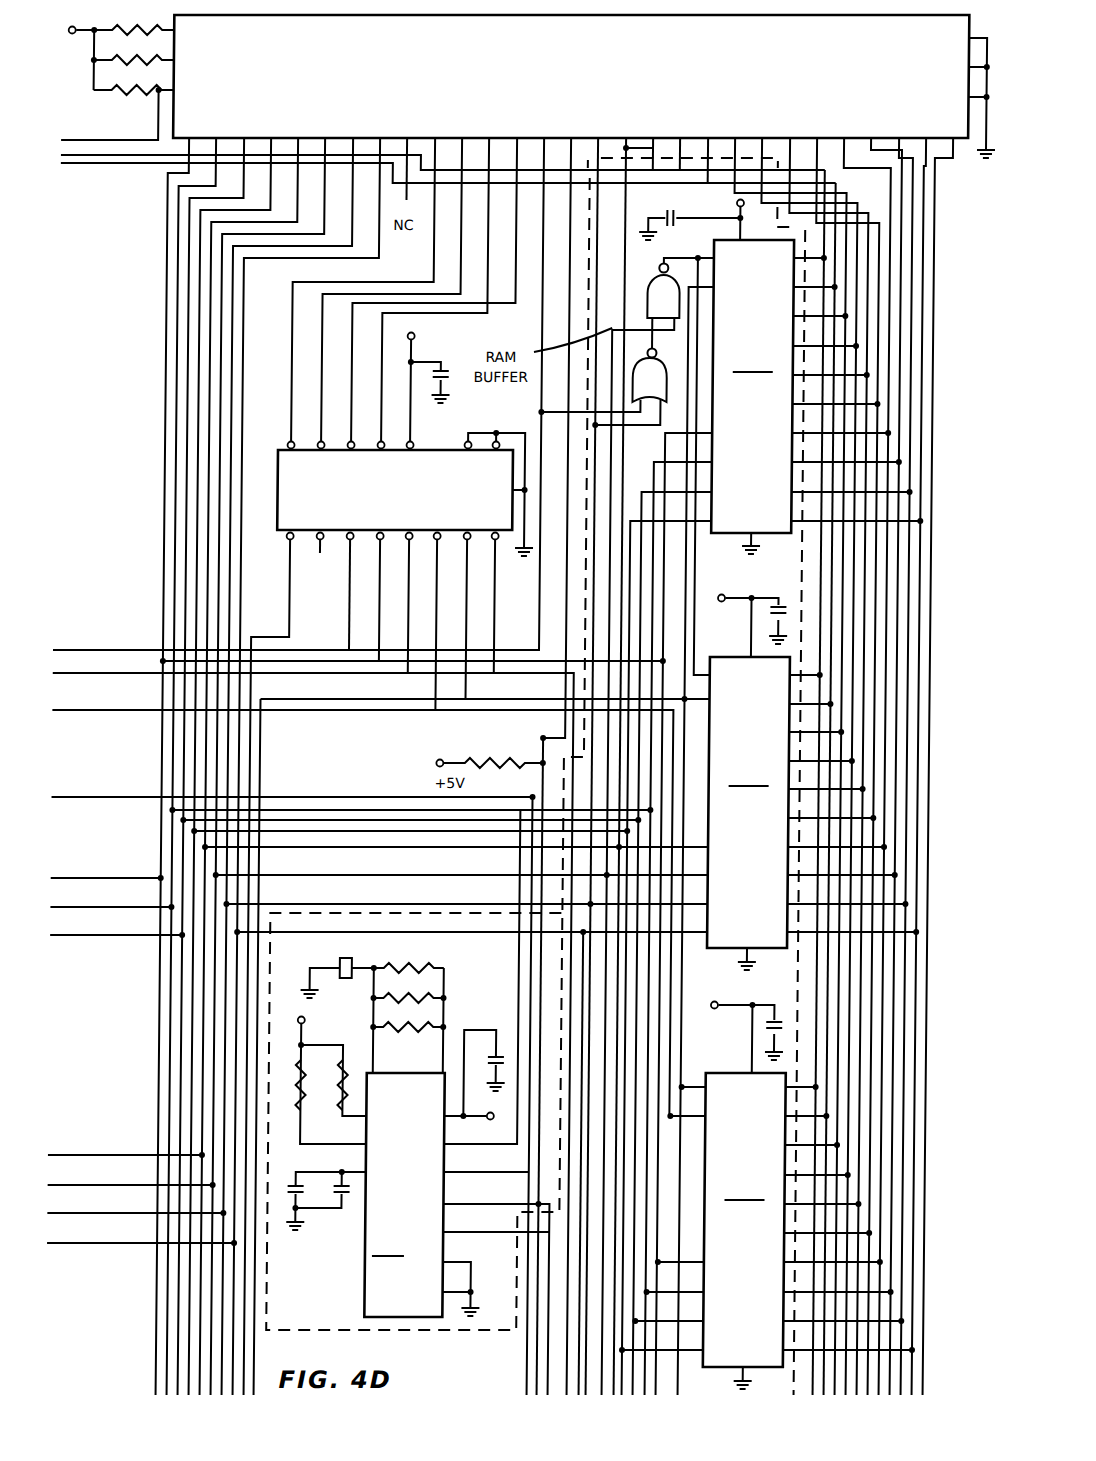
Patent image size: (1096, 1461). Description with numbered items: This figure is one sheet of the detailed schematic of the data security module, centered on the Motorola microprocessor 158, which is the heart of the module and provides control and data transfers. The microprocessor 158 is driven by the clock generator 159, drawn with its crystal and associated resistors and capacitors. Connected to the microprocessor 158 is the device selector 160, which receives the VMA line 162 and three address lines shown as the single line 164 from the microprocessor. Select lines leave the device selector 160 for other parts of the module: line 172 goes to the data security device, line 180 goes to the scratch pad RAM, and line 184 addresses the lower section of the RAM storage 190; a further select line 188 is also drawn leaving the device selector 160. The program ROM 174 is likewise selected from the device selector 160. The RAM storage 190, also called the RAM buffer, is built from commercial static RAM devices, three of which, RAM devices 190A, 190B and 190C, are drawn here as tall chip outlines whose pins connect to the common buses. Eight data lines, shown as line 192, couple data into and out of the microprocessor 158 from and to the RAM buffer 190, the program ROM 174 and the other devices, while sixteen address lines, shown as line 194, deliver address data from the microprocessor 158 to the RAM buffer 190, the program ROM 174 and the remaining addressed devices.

The 6800 microprocessor 158 is at (808, 60).
The clock generator 159 is at (520, 998).
The device selector 160 is at (284, 514).
The VMA line 162 is at (383, 428).
The address lines 164 is at (323, 412).
The line to data security device 172 is at (353, 640).
The program ROM 174 is at (293, 601).
The line to scratch pad RAM 180 is at (498, 568).
The line to lower RAM section 184 is at (440, 626).
The device select output line 188 is at (470, 601).
The RAM storage 190 is at (800, 1003).
The RAM storage device 190A is at (774, 795).
The RAM storage device 190B is at (801, 771).
The RAM storage device 190C is at (769, 1196).
The data lines 192 is at (195, 296).
The address lines 194 is at (900, 262).